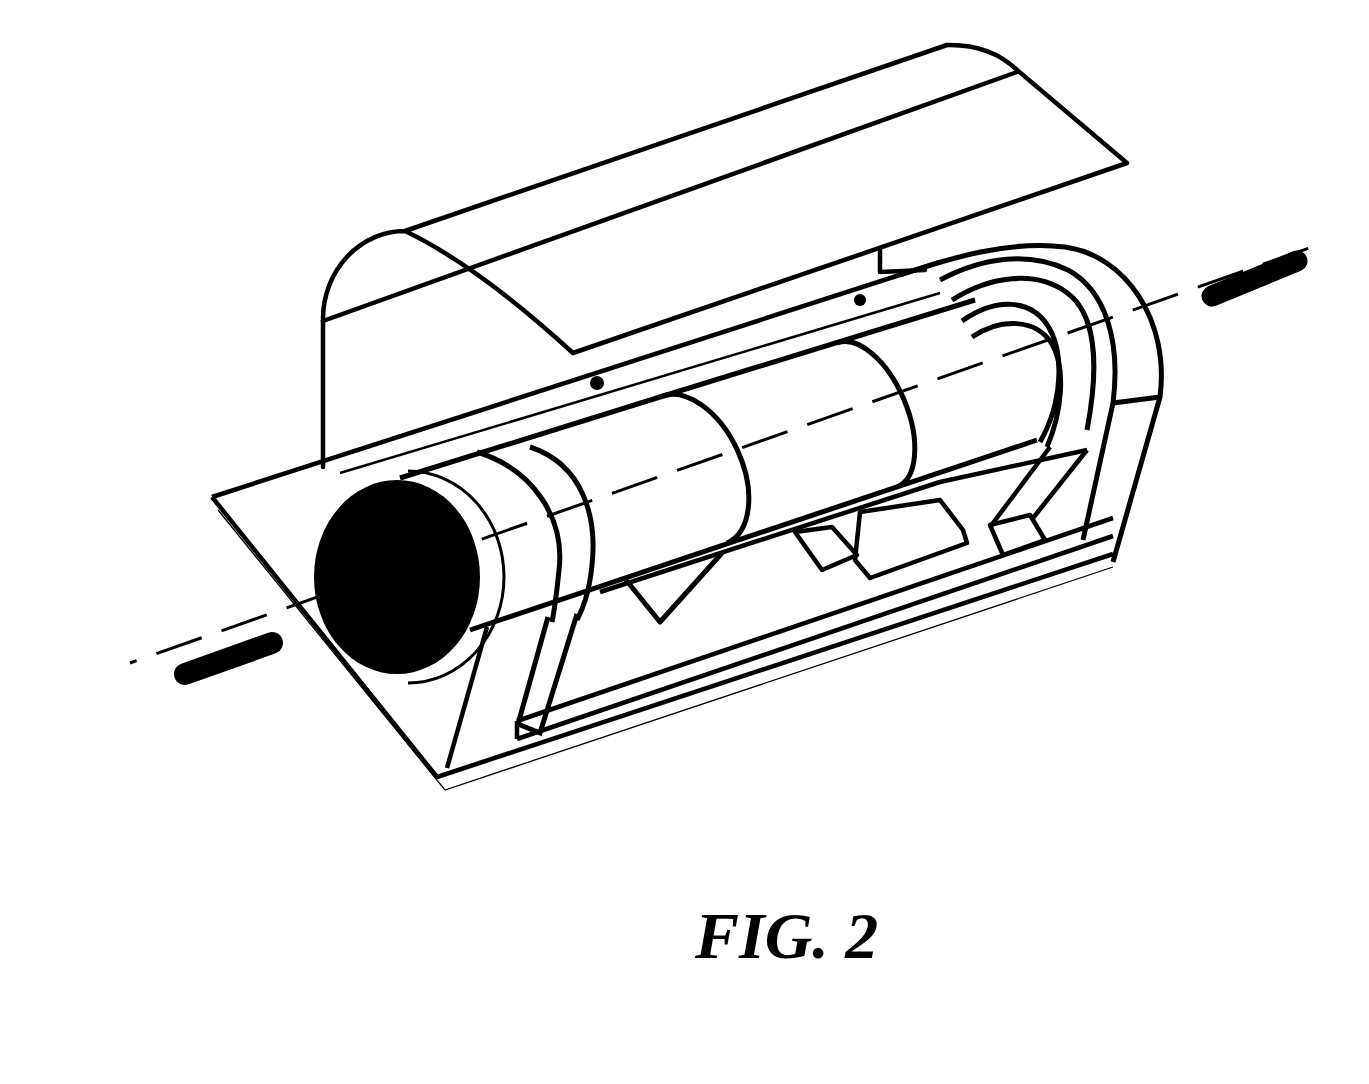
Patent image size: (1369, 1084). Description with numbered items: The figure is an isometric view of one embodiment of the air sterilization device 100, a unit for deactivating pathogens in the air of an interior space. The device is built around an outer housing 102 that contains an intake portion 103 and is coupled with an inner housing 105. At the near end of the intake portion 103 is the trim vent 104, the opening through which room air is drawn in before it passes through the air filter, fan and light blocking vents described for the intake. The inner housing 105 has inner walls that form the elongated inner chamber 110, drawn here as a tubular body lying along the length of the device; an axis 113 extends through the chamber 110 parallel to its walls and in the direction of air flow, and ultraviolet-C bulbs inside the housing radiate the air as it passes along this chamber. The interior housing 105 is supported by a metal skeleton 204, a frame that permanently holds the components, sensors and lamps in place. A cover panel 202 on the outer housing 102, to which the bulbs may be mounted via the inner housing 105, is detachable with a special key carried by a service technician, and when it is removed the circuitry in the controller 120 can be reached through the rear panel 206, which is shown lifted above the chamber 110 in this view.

The air sterilization device 100 is at (137, 227).
The outer housing 102 is at (1127, 522).
The intake portion 103 is at (1128, 226).
The trim vent 104 is at (357, 540).
The inner housing 105 is at (626, 542).
The inner chamber 110 is at (730, 407).
The axis 113 is at (617, 493).
The controller 120 is at (947, 560).
The cover panel 202 is at (880, 362).
The metal skeleton 204 is at (833, 533).
The rear panel 206 is at (700, 258).